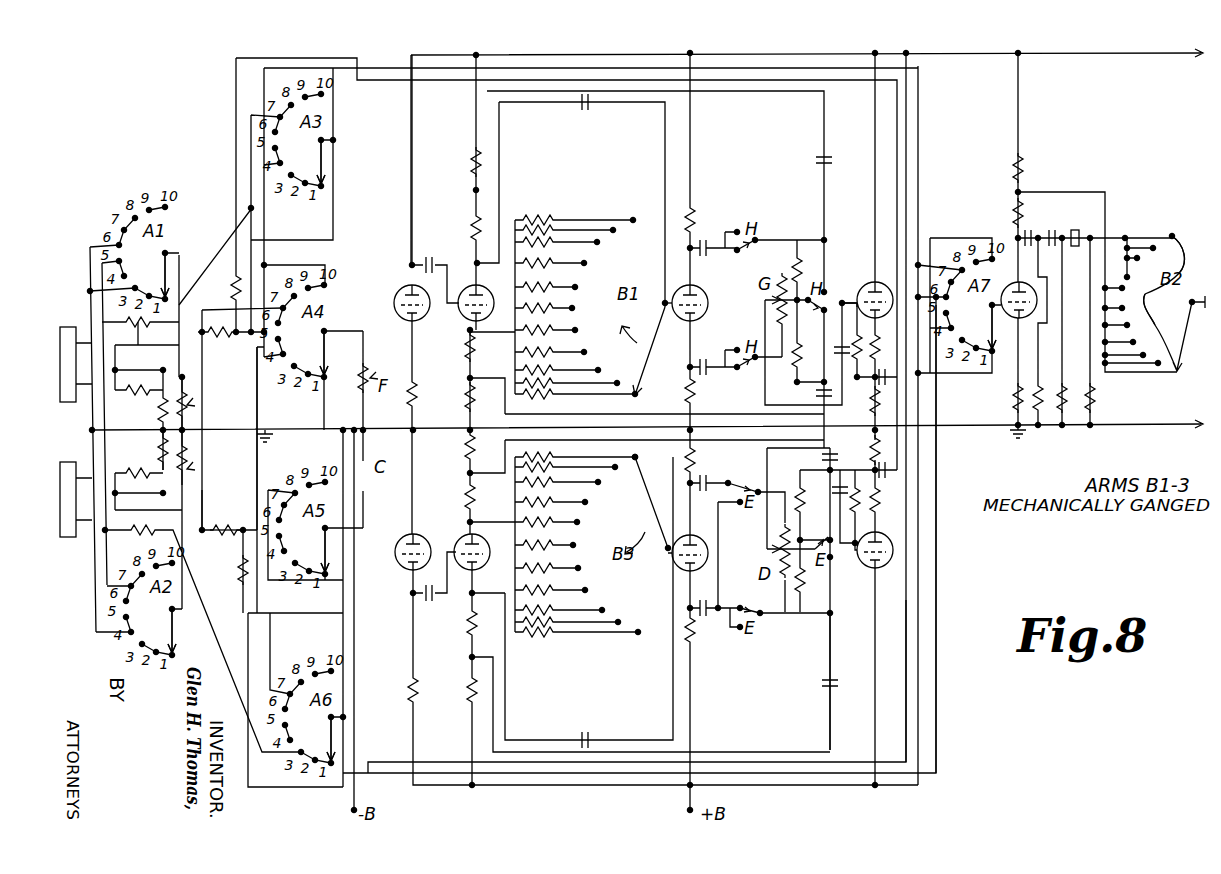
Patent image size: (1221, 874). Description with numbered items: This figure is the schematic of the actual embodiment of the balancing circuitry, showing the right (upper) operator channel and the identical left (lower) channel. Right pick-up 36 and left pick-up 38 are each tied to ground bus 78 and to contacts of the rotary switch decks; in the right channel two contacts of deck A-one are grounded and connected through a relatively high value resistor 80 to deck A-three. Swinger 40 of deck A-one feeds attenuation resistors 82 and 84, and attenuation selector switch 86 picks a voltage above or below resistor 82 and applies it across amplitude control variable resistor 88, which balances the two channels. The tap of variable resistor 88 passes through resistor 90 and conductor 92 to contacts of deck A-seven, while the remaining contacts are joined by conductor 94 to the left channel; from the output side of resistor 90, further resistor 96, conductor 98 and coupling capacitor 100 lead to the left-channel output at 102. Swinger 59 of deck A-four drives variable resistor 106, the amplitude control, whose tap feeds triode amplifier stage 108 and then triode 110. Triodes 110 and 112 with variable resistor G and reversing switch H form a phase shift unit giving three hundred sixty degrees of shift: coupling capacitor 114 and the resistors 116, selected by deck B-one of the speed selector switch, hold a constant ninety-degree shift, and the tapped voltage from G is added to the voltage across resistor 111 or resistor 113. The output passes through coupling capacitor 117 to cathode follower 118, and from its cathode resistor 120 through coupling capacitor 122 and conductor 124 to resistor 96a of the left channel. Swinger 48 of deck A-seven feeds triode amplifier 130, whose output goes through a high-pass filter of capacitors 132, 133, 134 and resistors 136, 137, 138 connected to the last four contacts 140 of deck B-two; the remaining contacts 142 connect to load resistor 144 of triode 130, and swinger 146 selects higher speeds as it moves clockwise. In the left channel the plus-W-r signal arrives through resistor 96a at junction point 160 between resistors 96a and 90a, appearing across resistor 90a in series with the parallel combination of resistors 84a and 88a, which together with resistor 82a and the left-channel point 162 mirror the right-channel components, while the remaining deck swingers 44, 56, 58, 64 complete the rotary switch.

The right pick-up 36 is at (67, 326).
The left pick-up 38 is at (68, 462).
The swinger of deck A1 40 is at (165, 272).
The switch arm A2 44 is at (177, 637).
The swinger of deck A7 48 is at (992, 325).
The switch arm A3 56 is at (320, 157).
The switch arm A6 58 is at (330, 733).
The swinger of deck A4 59 is at (323, 353).
The switch arm A5 64 is at (324, 541).
The ground bus 78 is at (298, 427).
The relatively high value resistor 80 is at (140, 341).
The attenuation resistor 82 is at (135, 394).
The left-channel attenuation resistor 82a is at (148, 469).
The attenuation resistor 84 is at (160, 412).
The left-channel attenuation resistor 84a is at (160, 445).
The attenuation selector switch 86 is at (175, 370).
The amplitude control variable resistor 88 is at (194, 410).
The left-channel amplitude control variable resistor 88a is at (190, 441).
The resistor 90 is at (222, 342).
The left-channel resistor 90a is at (228, 526).
The conductor 92 is at (378, 68).
The conductor 94 is at (938, 607).
The further resistor 96 is at (231, 291).
The left-channel resistor 96a is at (241, 582).
The conductor 98 is at (235, 122).
The coupling capacitor 100 is at (892, 473).
The output of the left channel 102 is at (867, 466).
The variable resistor 106 is at (373, 364).
The triode amplifier stage 108 is at (398, 292).
The triode 110 is at (468, 280).
The resistor 111 is at (474, 398).
The triode 112 is at (670, 287).
The resistor 113 is at (470, 158).
The coupling capacitor 114 is at (582, 107).
The resistors 116 is at (545, 216).
The coupling capacitor 117 is at (837, 353).
The cathode follower 118 is at (867, 284).
The cathode resistor 120 is at (867, 398).
The coupling capacitor 122 is at (890, 382).
The conductor 124 is at (906, 643).
The triode amplifier 130 is at (1008, 288).
The capacitor 132 is at (1012, 213).
The capacitor 133 is at (1050, 231).
The capacitor 134 is at (1075, 229).
The resistor 136 is at (1010, 391).
The resistor 137 is at (1070, 390).
The resistor 138 is at (1096, 400).
The last four contacts of deck B2 140 is at (1153, 283).
The remaining contacts of deck B2 142 is at (1166, 309).
The load resistor 144 is at (1015, 203).
The swinger of deck B2 146 is at (1185, 347).
The junction point 160 is at (250, 526).
The conductor 162 is at (196, 535).